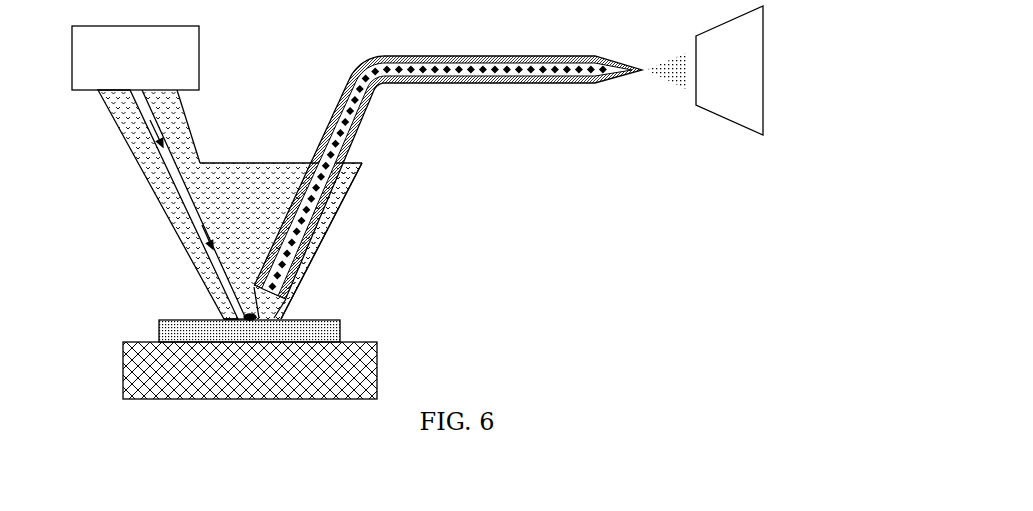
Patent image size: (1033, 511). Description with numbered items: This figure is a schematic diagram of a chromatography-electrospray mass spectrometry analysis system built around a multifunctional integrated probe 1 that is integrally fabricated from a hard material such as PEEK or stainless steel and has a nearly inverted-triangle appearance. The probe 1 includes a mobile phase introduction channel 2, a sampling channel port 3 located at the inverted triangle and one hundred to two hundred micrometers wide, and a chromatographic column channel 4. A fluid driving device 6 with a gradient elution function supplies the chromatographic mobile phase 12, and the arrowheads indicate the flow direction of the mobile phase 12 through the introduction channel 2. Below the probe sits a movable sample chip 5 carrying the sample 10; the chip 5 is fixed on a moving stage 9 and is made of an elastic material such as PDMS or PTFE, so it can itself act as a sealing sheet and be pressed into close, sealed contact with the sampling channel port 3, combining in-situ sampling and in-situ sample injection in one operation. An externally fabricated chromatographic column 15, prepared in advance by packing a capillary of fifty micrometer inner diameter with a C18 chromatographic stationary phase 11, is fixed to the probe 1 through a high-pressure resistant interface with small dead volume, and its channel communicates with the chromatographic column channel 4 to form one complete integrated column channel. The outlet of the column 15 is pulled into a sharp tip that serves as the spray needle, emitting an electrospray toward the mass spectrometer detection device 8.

The multifunctional integrated probe 1 is at (250, 163).
The mobile phase introduction channel 2 is at (173, 173).
The sampling channel port 3 is at (220, 313).
The chromatographic column channel 4 is at (285, 295).
The sample chip 5 is at (190, 330).
The fluid driving device 6 is at (135, 58).
The detection device 8 is at (725, 70).
The moving stage 9 is at (170, 370).
The sample 10 is at (282, 313).
The chromatographic stationary phase 11 is at (338, 205).
The chromatographic mobile phase 12 is at (667, 83).
The externally fabricated chromatographic column 15 is at (452, 83).